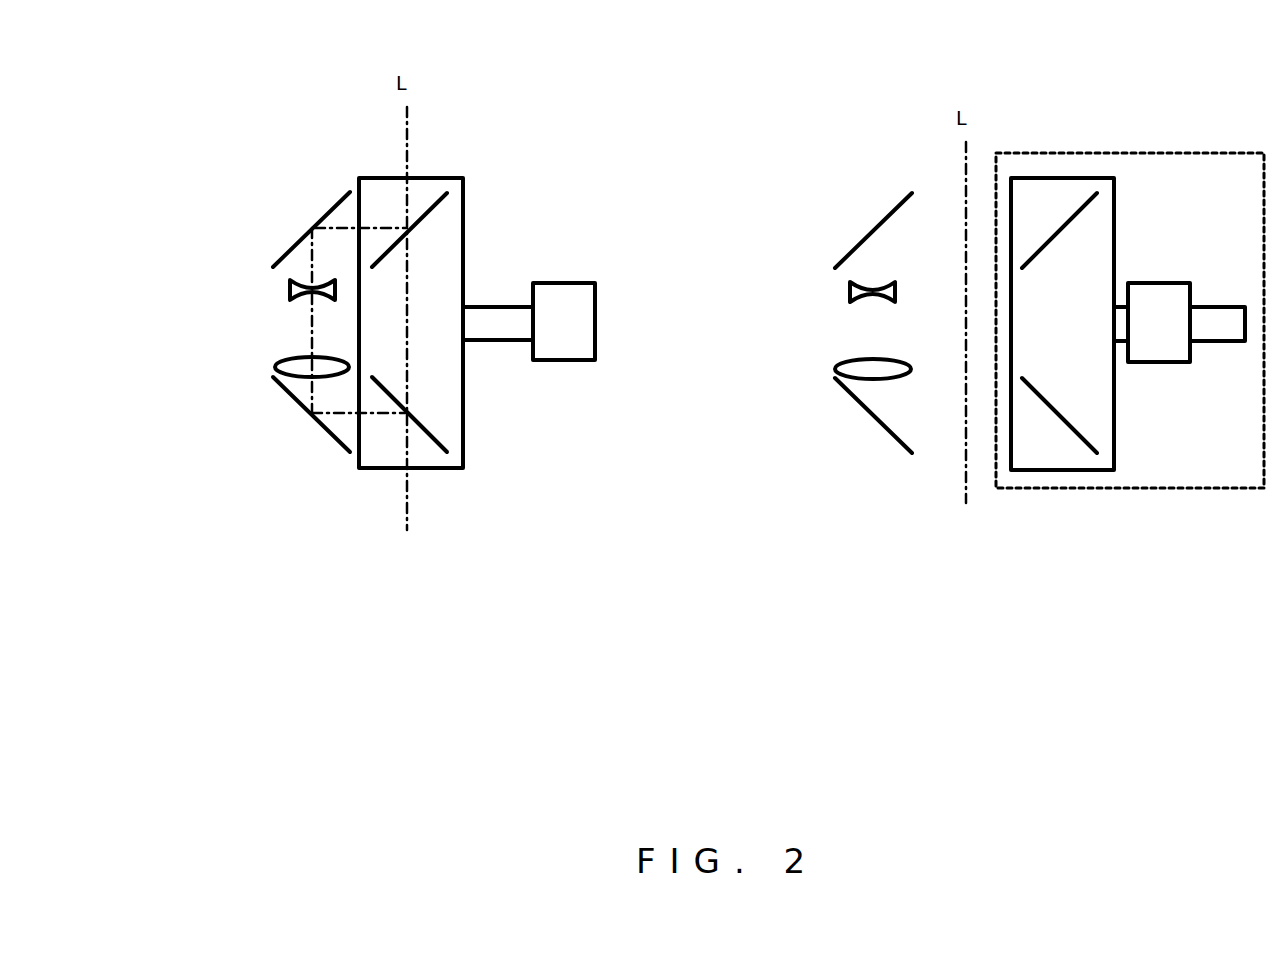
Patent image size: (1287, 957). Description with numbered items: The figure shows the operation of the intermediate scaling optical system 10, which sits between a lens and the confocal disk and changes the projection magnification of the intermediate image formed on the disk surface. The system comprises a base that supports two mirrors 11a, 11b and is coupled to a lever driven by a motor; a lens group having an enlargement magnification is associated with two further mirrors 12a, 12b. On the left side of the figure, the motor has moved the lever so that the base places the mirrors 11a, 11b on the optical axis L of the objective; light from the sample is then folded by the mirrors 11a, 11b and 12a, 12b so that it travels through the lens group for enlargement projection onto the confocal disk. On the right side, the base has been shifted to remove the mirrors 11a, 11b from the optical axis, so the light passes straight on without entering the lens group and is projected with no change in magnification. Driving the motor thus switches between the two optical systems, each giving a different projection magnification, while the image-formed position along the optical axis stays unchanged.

The intermediate scaling optical system 10 is at (245, 119).
The mirror 11a is at (386, 268).
The mirror 11b is at (385, 387).
The mirror 12a is at (315, 227).
The mirror 12b is at (308, 413).